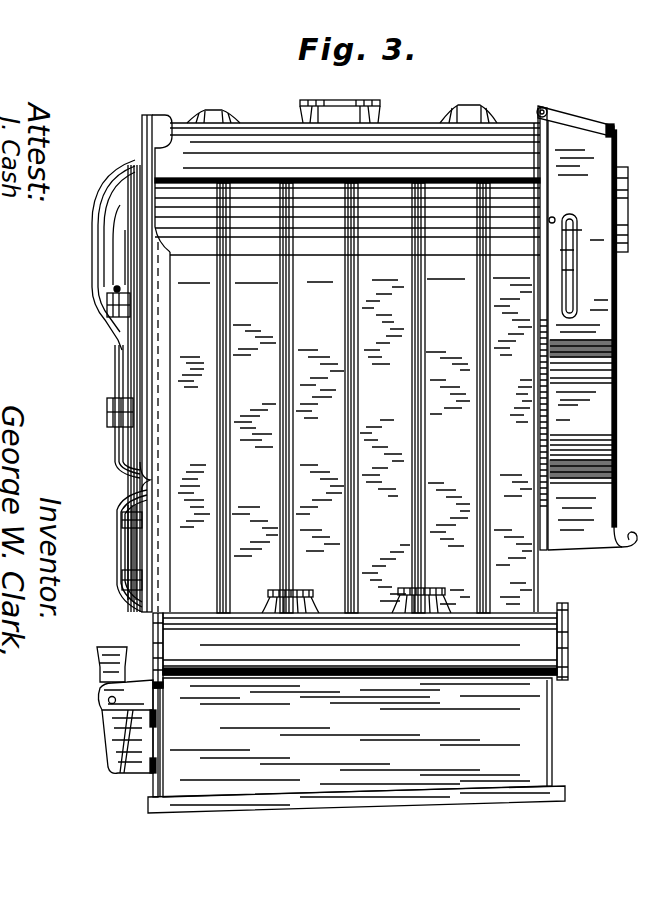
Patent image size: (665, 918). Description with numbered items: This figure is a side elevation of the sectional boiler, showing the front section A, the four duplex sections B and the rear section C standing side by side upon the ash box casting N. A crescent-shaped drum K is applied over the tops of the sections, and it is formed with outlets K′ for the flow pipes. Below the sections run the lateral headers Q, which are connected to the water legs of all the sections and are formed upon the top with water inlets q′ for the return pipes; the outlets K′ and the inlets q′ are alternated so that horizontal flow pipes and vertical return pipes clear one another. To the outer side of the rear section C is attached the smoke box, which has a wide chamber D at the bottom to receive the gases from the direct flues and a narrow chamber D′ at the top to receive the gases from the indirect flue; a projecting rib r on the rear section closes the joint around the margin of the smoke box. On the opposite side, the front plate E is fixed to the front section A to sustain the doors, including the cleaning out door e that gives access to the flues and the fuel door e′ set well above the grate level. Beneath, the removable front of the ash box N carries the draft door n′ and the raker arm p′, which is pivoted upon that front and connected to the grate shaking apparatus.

The front plate E is at (142, 131).
The drum K is at (347, 153).
The outlets K′ is at (378, 114).
The narrow chamber D′ is at (573, 253).
The front section A is at (200, 398).
The duplex sections B is at (351, 398).
The rear section C is at (504, 398).
The projecting rib r is at (548, 420).
The wide chamber D is at (603, 414).
The cleaning out door e is at (96, 263).
The fuel door e′ is at (117, 557).
The water inlets q′ is at (268, 594).
The lateral headers Q is at (360, 645).
The ash box casting N is at (356, 745).
The raker arm p′ is at (106, 742).
The draft door n′ is at (153, 786).